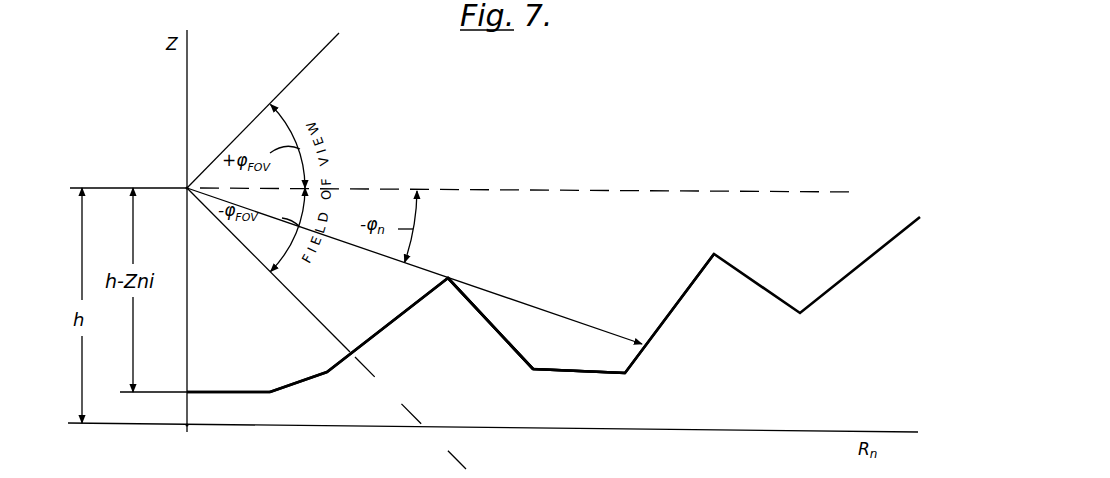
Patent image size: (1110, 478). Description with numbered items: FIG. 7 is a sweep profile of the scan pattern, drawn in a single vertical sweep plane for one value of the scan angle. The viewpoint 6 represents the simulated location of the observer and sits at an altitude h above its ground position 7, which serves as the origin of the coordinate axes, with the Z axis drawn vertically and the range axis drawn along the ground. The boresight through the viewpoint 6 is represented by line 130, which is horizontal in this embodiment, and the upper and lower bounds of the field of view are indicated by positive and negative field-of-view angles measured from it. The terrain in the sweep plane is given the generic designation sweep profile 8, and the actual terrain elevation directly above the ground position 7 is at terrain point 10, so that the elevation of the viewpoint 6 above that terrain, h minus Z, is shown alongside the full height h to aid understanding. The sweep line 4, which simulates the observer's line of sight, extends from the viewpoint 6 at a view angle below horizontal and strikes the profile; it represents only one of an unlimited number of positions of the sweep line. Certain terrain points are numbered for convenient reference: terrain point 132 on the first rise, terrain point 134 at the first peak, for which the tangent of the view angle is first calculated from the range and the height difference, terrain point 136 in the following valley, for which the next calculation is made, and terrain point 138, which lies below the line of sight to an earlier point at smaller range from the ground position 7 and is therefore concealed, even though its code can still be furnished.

The sweep line 4 is at (532, 306).
The viewpoint 6 is at (186, 187).
The ground position 7 is at (185, 426).
The sweep profile 8 is at (862, 266).
The terrain point 10 is at (186, 390).
The boresight line 130 is at (635, 191).
The terrain point 132 is at (328, 373).
The terrain point 134 is at (455, 272).
The terrain point 136 is at (532, 371).
The terrain point 138 is at (627, 376).